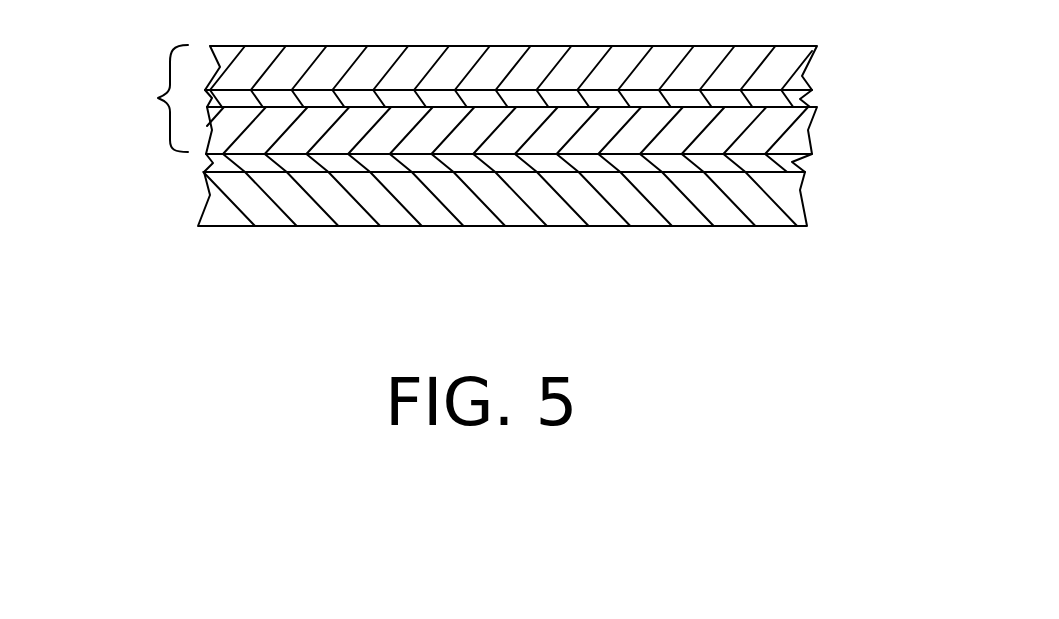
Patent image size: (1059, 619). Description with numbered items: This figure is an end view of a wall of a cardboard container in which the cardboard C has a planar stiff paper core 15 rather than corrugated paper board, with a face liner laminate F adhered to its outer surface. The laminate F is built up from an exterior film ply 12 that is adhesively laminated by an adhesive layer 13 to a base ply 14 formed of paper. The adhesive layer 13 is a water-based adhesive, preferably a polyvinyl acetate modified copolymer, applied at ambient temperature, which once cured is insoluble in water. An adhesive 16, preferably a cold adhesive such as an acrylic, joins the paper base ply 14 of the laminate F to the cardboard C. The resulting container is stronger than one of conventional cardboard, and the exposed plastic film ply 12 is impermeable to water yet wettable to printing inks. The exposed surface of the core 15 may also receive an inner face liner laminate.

The exterior film ply 12 is at (792, 67).
The adhesive layer 13 is at (800, 98).
The base ply 14 is at (790, 140).
The planar stiff paper core 15 is at (760, 203).
The adhesive 16 is at (207, 163).
The face liner laminate F is at (125, 93).
The cardboard C is at (318, 235).